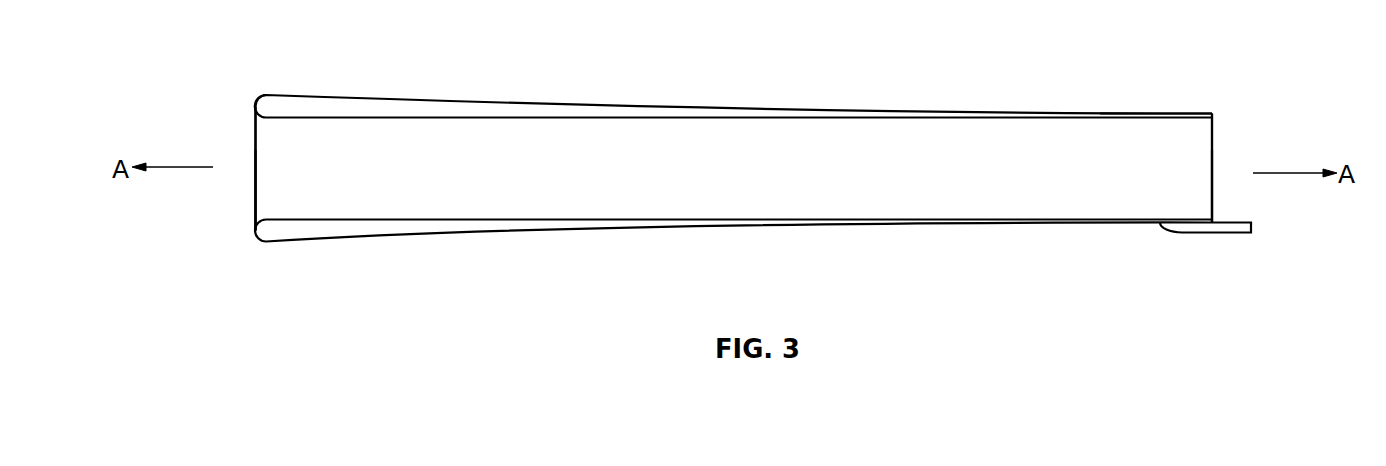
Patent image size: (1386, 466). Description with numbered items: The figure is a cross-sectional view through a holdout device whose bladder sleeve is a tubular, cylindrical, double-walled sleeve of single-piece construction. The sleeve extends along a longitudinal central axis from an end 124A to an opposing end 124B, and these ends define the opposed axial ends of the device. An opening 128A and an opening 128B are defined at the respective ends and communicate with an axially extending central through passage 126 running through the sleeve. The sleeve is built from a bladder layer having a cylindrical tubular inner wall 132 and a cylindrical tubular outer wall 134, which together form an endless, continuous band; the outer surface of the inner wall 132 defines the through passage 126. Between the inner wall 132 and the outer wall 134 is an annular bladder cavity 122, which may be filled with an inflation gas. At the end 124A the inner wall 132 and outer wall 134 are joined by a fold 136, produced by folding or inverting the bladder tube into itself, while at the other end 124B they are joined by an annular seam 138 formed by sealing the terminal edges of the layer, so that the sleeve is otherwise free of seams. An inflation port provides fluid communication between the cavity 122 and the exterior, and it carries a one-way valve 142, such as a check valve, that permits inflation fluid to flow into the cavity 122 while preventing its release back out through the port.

The bladder cavity 122 is at (298, 105).
The end 124A is at (264, 94).
The opposing end 124B is at (1213, 110).
The central through passage 126 is at (613, 174).
The opening 128A is at (244, 188).
The opening 128B is at (1213, 188).
The inner wall 132 is at (380, 218).
The outer wall 134 is at (415, 242).
The fold 136 is at (253, 107).
The annular seam 138 is at (1170, 112).
The one-way valve 142 is at (1220, 237).